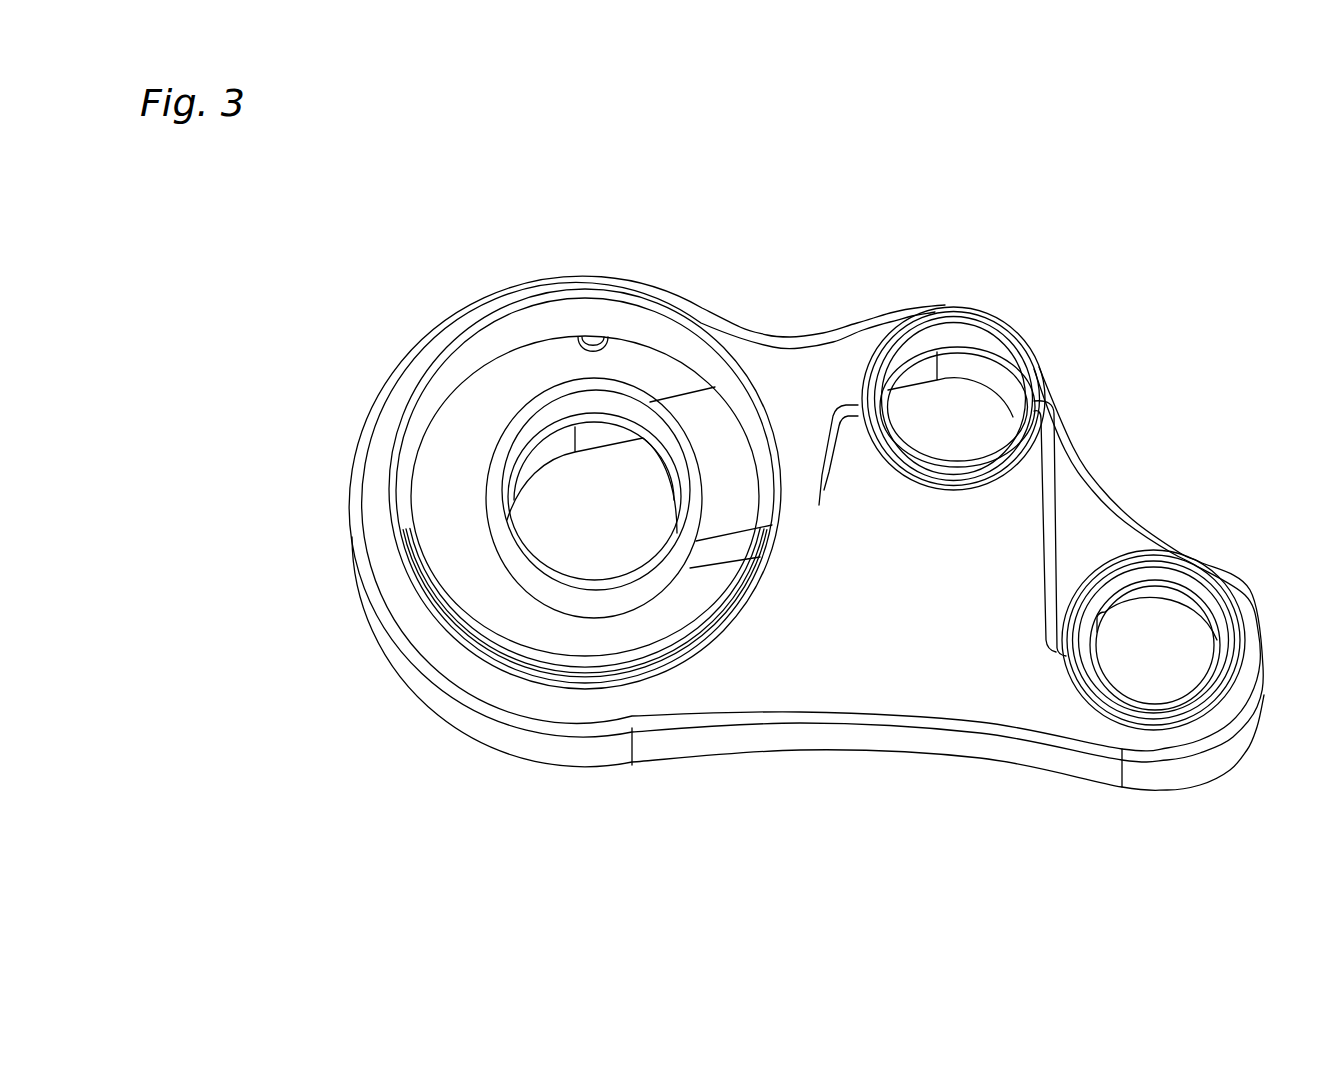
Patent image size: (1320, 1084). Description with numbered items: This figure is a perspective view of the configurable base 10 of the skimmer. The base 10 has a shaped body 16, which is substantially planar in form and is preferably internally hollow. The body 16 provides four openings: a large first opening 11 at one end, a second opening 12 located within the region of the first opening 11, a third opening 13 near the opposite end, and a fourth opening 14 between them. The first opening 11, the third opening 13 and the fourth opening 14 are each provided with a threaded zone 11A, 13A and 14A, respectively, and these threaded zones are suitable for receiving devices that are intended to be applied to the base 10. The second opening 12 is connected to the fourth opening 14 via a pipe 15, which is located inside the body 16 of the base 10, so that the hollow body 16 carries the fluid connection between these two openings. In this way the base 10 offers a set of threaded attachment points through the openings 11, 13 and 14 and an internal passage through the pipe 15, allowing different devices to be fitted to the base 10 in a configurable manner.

The base 10 is at (376, 298).
The first opening 11 is at (440, 622).
The threaded zone 11A is at (527, 678).
The second opening 12 is at (546, 386).
The third opening 13 is at (1198, 566).
The threaded zone 13A is at (1110, 721).
The fourth opening 14 is at (1013, 323).
The threaded zone 14A is at (1030, 378).
The pipe 15 is at (730, 503).
The shaped body 16 is at (847, 757).